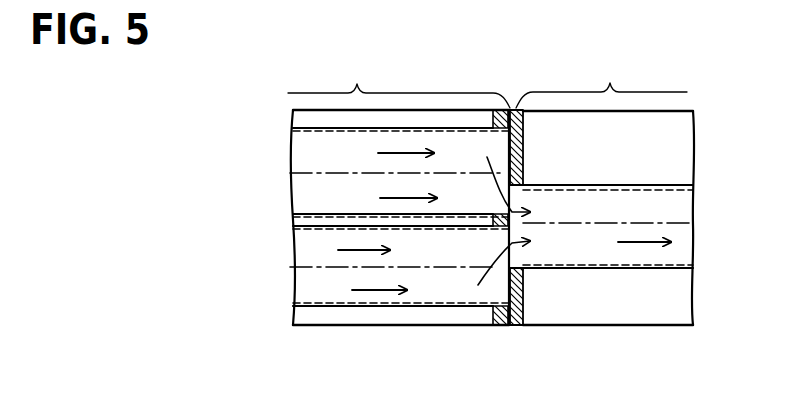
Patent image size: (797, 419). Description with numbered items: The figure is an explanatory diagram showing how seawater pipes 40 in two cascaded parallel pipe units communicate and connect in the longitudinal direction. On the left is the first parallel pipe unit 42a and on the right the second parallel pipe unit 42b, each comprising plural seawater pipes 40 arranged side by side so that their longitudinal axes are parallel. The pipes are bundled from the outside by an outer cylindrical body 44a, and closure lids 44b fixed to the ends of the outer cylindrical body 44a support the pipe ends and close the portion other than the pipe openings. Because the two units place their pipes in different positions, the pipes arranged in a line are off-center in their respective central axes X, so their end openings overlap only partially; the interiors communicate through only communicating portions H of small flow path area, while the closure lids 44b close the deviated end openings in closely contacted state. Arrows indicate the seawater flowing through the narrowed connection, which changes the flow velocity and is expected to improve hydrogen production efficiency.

The seawater pipe 40 is at (305, 141).
The first parallel pipe unit 42a is at (399, 178).
The second parallel pipe unit 42b is at (601, 159).
The outer cylindrical body 44a is at (403, 326).
The closure lid 44b is at (527, 140).
The communicating portion H is at (530, 184).
The central axis X is at (287, 186).